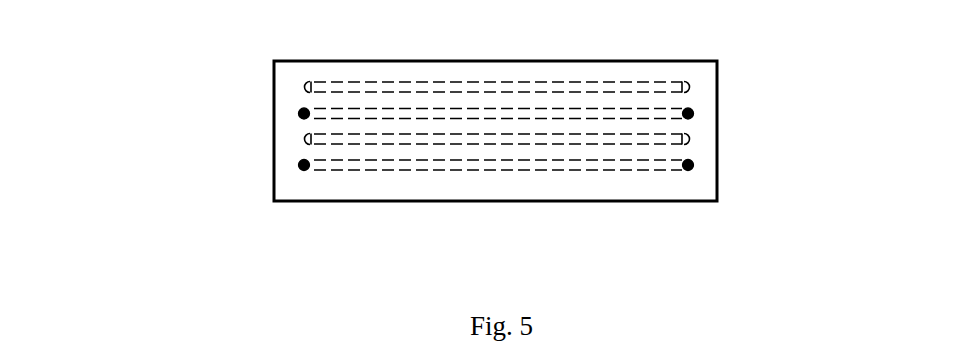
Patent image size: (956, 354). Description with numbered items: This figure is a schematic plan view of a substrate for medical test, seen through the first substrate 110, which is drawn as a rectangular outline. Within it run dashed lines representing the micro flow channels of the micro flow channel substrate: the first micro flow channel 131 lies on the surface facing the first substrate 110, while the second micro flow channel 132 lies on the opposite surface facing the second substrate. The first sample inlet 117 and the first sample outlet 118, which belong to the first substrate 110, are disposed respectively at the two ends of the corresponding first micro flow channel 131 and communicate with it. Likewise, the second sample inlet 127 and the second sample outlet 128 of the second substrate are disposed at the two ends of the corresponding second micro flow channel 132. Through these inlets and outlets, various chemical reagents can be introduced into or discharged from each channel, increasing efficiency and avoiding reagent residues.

The first substrate 110 is at (606, 193).
The first sample inlet 117 is at (304, 114).
The first sample outlet 118 is at (688, 114).
The second sample inlet 127 is at (304, 86).
The second sample outlet 128 is at (688, 87).
The first micro flow channel 131 is at (357, 114).
The second micro flow channel 132 is at (542, 88).